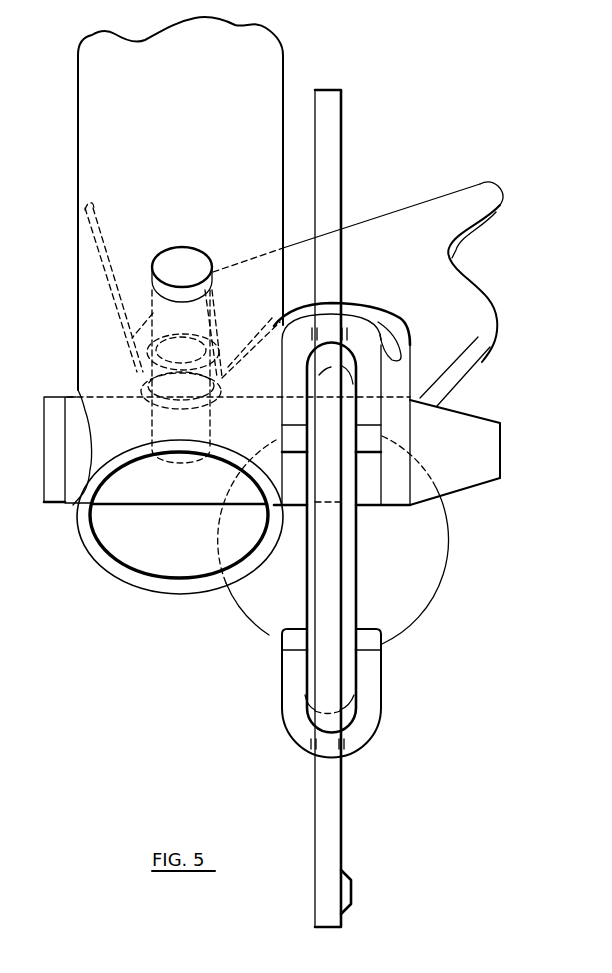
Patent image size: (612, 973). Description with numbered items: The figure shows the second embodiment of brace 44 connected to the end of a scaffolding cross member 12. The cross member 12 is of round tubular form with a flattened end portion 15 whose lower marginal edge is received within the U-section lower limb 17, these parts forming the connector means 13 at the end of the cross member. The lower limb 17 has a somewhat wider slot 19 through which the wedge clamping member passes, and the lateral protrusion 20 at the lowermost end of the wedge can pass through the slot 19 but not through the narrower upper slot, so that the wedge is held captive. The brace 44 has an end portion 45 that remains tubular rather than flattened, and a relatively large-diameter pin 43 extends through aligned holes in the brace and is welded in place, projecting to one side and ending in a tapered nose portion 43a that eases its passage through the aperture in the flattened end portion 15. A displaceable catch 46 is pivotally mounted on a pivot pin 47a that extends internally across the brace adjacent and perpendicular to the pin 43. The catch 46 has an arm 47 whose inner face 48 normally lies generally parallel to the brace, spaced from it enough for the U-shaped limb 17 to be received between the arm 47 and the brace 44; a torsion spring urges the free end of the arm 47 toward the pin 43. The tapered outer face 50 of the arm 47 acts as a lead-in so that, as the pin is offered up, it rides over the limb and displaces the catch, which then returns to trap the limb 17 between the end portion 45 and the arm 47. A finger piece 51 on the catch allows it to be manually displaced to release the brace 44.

The cross member 12 is at (461, 580).
The connector means 13 is at (258, 691).
The flattened end portion 15 is at (357, 557).
The lower limb 17 is at (282, 713).
The slot 19 is at (348, 744).
The lateral protrusion 20 is at (352, 893).
The pin 43 is at (515, 450).
The tapered nose portion 43a is at (489, 488).
The brace 44 is at (72, 121).
The end portion 45 is at (77, 337).
The catch 46 is at (372, 240).
The arm 47 is at (478, 342).
The pivot pin 47a is at (192, 257).
The inner face 48 is at (389, 322).
The outer face 50 is at (463, 372).
The finger piece 51 is at (483, 196).